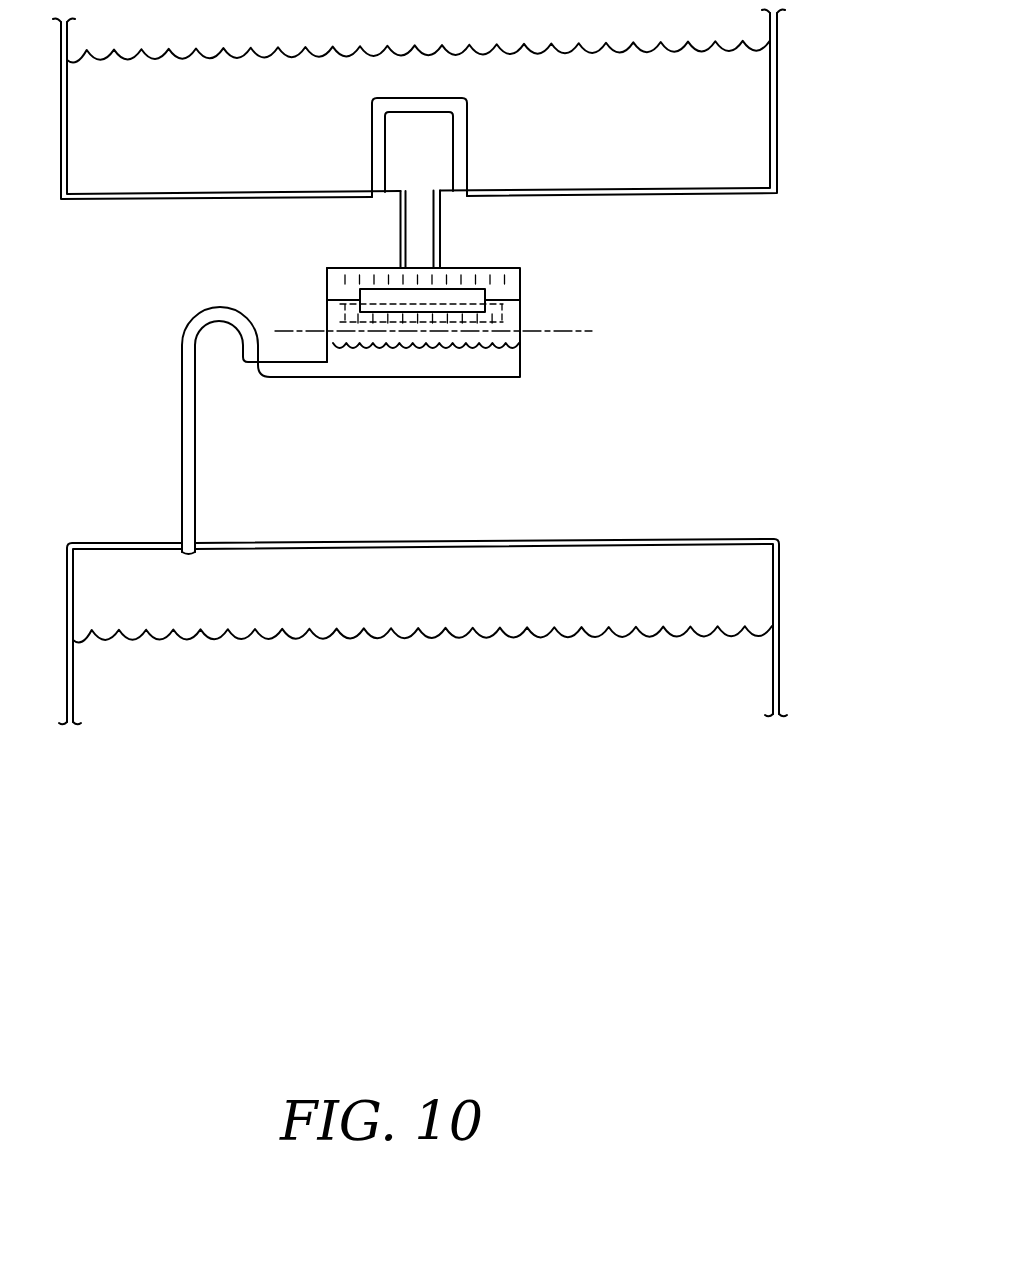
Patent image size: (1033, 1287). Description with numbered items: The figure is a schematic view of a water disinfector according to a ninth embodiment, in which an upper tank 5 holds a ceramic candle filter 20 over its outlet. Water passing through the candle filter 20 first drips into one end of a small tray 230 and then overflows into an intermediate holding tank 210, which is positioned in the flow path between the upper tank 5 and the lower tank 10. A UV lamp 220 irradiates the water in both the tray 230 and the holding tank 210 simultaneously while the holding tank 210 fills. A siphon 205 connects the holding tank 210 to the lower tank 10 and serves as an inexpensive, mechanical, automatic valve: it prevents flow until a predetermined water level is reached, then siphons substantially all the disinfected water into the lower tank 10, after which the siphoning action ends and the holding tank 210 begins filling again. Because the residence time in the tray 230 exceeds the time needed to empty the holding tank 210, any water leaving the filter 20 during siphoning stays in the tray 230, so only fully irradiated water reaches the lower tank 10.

The upper tank 5 is at (777, 162).
The lower tank 10 is at (777, 606).
The ceramic candle filter 20 is at (467, 137).
The siphon 205 is at (207, 319).
The intermediate holding tank 210 is at (520, 357).
The UV lamp 220 is at (458, 298).
The small tray 230 is at (502, 309).